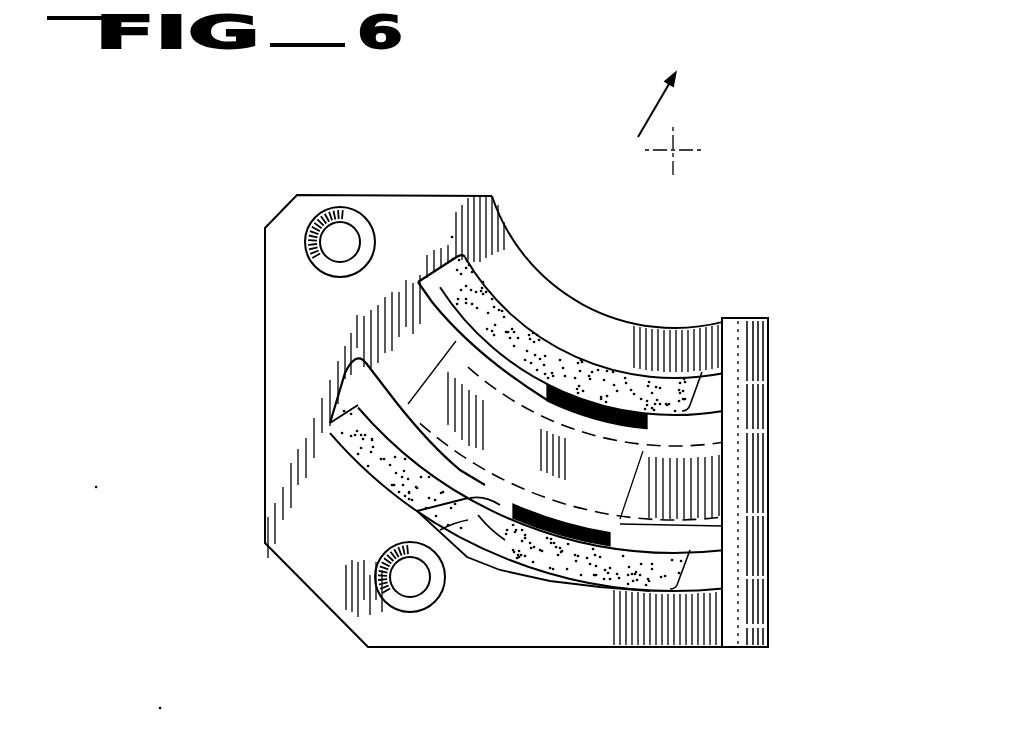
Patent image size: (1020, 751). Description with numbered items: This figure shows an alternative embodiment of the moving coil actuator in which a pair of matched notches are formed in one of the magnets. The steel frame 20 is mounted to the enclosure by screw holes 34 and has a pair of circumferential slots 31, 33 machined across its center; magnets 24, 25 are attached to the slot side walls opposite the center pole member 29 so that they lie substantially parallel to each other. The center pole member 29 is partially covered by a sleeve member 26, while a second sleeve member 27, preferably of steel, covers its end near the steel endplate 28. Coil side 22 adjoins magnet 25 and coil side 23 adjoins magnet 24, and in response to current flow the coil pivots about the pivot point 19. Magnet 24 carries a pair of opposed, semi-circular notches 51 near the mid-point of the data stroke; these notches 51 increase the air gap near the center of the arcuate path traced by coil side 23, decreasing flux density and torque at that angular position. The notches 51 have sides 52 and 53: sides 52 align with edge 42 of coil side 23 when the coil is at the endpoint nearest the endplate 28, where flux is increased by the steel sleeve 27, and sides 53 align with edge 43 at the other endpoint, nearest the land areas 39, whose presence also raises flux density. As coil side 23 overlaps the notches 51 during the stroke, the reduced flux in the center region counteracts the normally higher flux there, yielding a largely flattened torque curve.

The pivot point 19 is at (676, 153).
The steel frame 20 is at (265, 268).
The coil side 22 is at (607, 372).
The coil side 23 is at (597, 562).
The magnet 24 is at (600, 580).
The magnet 25 is at (547, 350).
The sleeve member 26 is at (335, 456).
The second sleeve member 27 is at (700, 492).
The steel endplate 28 is at (772, 378).
The center pole member 29 is at (533, 263).
The slot 31 is at (390, 406).
The slot 33 is at (662, 428).
The screw holes 34 is at (350, 227).
The land areas 39 is at (462, 235).
The edge 42 is at (508, 506).
The edge 43 is at (606, 536).
The notches 51 is at (492, 527).
The sides 52 is at (490, 514).
The sides 53 is at (417, 512).